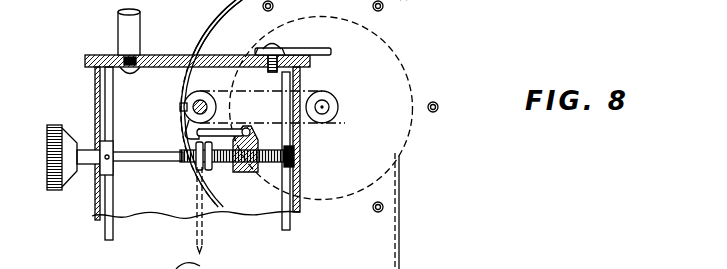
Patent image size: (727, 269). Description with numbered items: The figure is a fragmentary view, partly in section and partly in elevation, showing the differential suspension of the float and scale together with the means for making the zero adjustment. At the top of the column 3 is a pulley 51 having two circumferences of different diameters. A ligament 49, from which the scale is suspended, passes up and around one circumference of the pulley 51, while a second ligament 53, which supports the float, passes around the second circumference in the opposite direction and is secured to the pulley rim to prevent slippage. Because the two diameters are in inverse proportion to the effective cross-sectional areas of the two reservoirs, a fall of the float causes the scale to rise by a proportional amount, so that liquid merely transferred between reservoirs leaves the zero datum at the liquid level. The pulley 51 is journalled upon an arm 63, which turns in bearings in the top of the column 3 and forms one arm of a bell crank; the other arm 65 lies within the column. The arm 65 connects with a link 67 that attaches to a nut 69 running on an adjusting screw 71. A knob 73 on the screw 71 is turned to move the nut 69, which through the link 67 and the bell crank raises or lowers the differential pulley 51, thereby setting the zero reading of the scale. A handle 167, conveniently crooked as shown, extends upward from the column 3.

The column 3 is at (92, 216).
The ligament 49 is at (197, 238).
The pulley 51 is at (451, 68).
The second ligament 53 is at (400, 251).
The arm 63 is at (313, 90).
The arm 65 is at (186, 128).
The link 67 is at (226, 131).
The nut 69 is at (247, 172).
The adjusting screw 71 is at (152, 160).
The knob 73 is at (56, 187).
The handle 167 is at (141, 33).